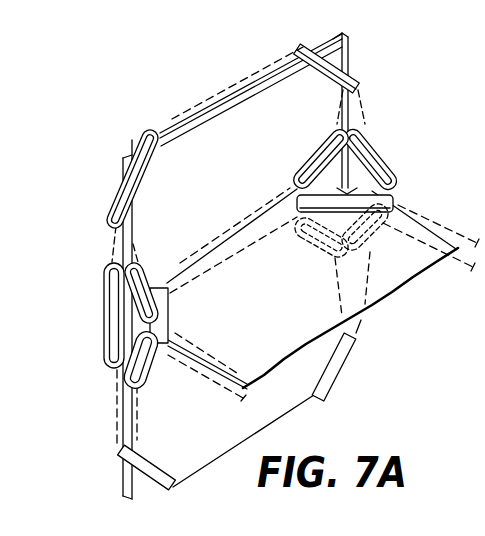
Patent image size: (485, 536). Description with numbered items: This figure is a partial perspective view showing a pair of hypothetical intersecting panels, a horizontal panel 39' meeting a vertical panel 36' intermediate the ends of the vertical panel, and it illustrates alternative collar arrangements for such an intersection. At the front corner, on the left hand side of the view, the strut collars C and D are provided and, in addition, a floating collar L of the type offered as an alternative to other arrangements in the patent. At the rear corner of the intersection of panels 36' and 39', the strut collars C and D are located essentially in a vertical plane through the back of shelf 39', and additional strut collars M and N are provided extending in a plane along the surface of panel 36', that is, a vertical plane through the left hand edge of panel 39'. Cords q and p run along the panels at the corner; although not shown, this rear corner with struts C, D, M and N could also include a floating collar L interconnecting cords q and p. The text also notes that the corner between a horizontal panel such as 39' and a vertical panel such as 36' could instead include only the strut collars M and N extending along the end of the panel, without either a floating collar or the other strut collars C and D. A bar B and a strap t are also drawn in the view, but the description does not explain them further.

The panel 36' is at (251, 158).
The panel 39' is at (313, 339).
The strap t is at (240, 222).
The cord p is at (117, 421).
The cord q is at (133, 243).
The bar B is at (165, 315).
The floating collar L is at (104, 306).
The strut collar C is at (148, 283).
The strut collar D is at (150, 381).
The strut collar M is at (318, 148).
The strut collar N is at (314, 256).